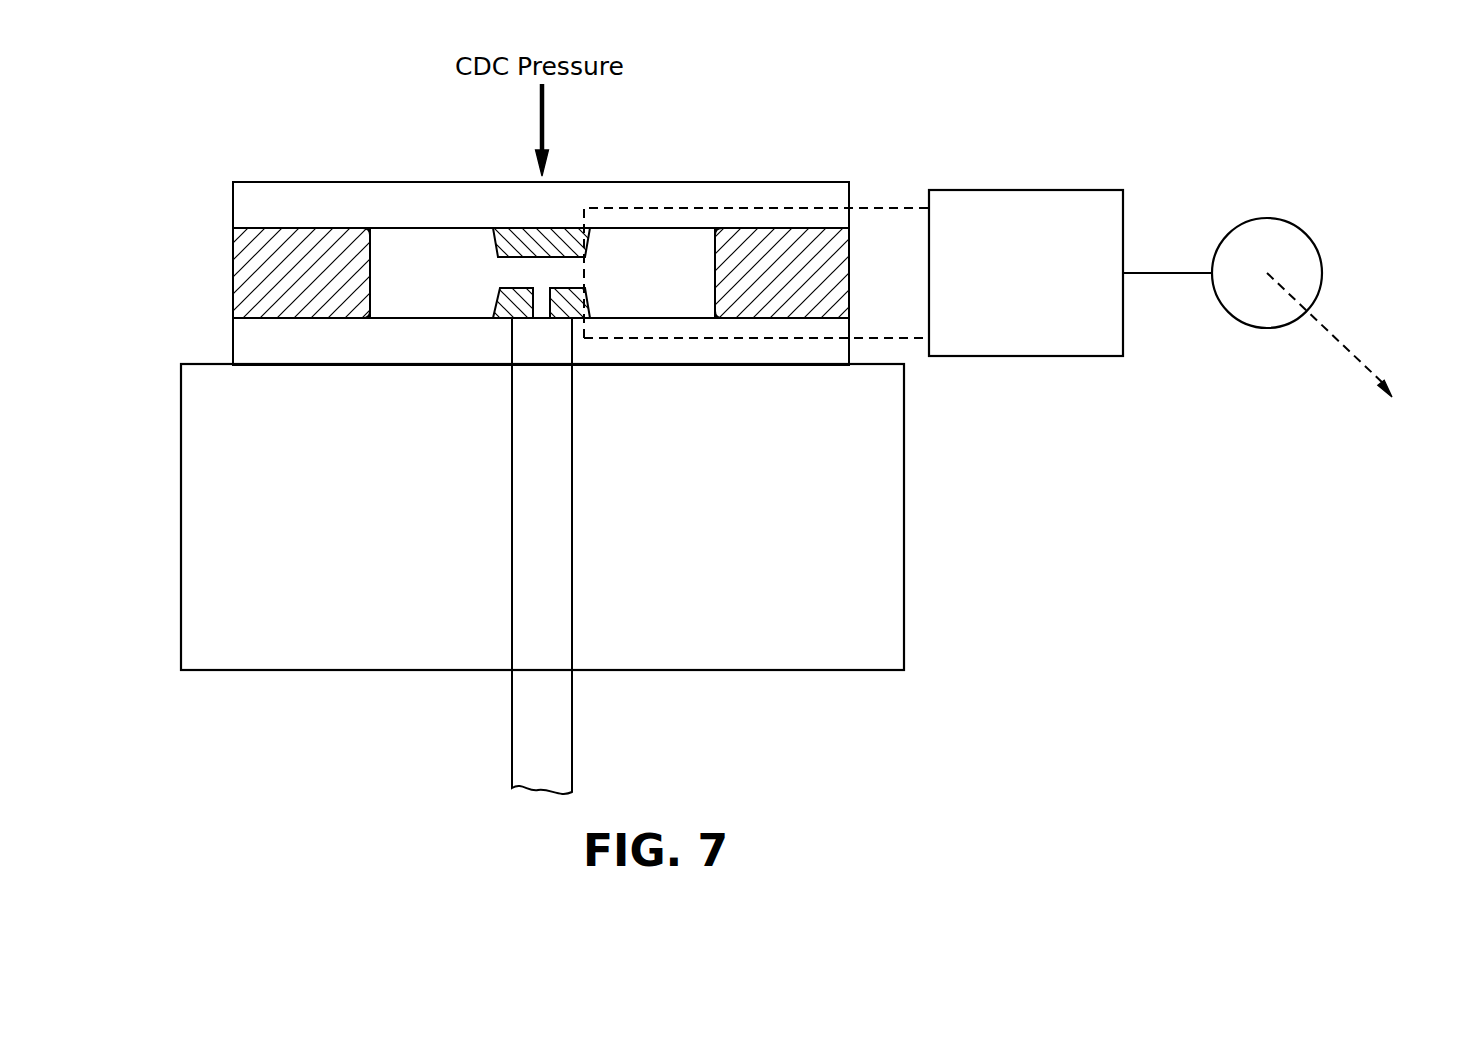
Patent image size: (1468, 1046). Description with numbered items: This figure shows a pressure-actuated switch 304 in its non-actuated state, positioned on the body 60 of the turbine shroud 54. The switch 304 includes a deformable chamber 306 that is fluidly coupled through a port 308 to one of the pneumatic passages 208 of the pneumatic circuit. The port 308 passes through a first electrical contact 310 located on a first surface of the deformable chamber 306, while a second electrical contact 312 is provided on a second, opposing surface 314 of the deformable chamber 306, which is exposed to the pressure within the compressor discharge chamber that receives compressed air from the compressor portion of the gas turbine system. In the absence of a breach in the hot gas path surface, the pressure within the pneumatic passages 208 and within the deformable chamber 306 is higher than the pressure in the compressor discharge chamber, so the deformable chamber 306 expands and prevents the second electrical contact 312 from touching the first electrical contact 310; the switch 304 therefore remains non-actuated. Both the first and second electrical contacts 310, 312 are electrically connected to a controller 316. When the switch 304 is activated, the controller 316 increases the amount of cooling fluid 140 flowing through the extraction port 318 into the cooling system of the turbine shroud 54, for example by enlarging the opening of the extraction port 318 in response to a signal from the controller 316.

The pressure-actuated switch 304 is at (216, 156).
The deformable chamber 306 is at (390, 208).
The port 308 is at (512, 306).
The first electrical contact 310 is at (588, 305).
The second electrical contact 312 is at (557, 228).
The surface of the deformable chamber 314 is at (458, 228).
The controller 316 is at (1002, 311).
The extraction port 318 is at (1278, 218).
The cooling fluid 140 is at (1258, 258).
The turbine shroud 54 is at (500, 493).
The body 60 is at (181, 500).
The pneumatic passages 208 is at (573, 740).